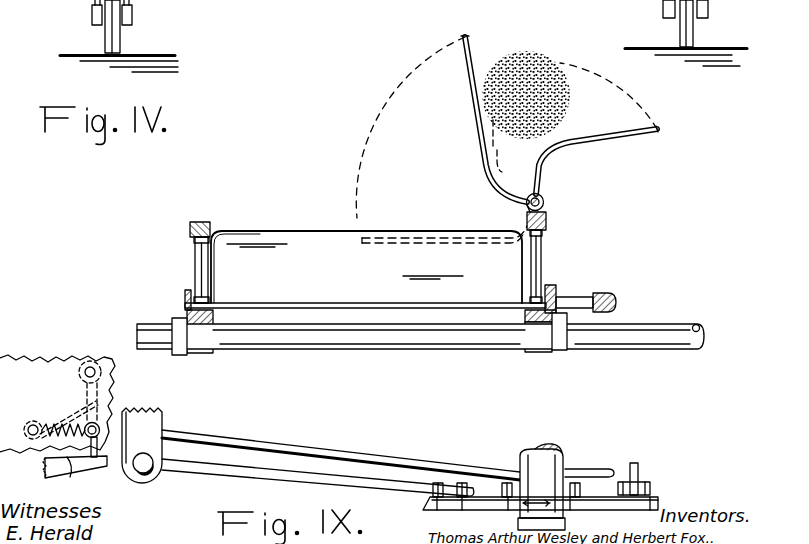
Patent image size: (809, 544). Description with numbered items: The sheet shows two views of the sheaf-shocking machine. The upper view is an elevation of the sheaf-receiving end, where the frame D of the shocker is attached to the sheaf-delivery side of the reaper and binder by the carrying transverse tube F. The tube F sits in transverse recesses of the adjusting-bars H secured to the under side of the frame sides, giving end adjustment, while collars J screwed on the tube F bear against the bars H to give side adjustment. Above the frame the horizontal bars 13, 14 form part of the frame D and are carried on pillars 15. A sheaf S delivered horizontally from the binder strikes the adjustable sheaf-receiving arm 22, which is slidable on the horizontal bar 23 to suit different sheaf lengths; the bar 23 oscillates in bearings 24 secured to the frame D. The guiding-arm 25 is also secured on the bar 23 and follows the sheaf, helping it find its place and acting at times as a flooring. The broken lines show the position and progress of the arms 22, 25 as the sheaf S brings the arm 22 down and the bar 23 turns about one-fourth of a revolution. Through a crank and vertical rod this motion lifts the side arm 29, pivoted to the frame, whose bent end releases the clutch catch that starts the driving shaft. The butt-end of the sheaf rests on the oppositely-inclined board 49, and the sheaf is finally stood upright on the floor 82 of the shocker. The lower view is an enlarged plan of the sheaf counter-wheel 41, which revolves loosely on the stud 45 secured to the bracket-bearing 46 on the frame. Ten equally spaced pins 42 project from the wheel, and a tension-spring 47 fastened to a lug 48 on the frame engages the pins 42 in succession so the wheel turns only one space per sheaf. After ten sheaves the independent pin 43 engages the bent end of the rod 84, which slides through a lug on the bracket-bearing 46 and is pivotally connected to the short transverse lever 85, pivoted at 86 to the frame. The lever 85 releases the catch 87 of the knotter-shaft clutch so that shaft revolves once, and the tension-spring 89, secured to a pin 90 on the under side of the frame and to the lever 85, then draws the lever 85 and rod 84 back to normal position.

In FIG. 4, the sheaf S is at (541, 64).
In FIG. 4, the adjustable sheaf-receiving arm 22 is at (467, 45).
In FIG. 4, the guiding-arm 25 is at (497, 147).
In FIG. 4, the bearings 24 is at (544, 202).
In FIG. 4, the horizontal bar 23 is at (527, 203).
In FIG. 4, the horizontal bar 13 is at (547, 222).
In FIG. 4, the horizontal bar 14 is at (190, 225).
In FIG. 4, the pillars 15 is at (196, 261).
In FIG. 4, the inclined board 49 is at (297, 238).
In FIG. 4, the floor 82 is at (310, 307).
In FIG. 4, the frame D is at (185, 297).
In FIG. 4, the side arm 29 is at (605, 295).
In FIG. 4, the adjusting-bars H is at (212, 353).
In FIG. 4, the carrying transverse tube F is at (380, 347).
In FIG. 4, the collars J is at (177, 354).
In FIG. 9, the pivot 86 is at (98, 351).
In FIG. 9, the short transverse lever 85 is at (96, 410).
In FIG. 9, the pin 90 is at (31, 422).
In FIG. 9, the tension-spring 89 is at (67, 420).
In FIG. 9, the catch 87 is at (45, 466).
In FIG. 9, the lug 48 is at (153, 475).
In FIG. 9, the tension-spring 47 is at (267, 480).
In FIG. 9, the rod 84 is at (413, 463).
In FIG. 9, the teeth or pins 42 is at (460, 487).
In FIG. 9, the bracket-bearing 46 is at (527, 450).
In FIG. 9, the independent pin 43 is at (633, 463).
In FIG. 9, the sheaf counter-wheel 41 is at (497, 508).
In FIG. 9, the stud 45 is at (578, 508).